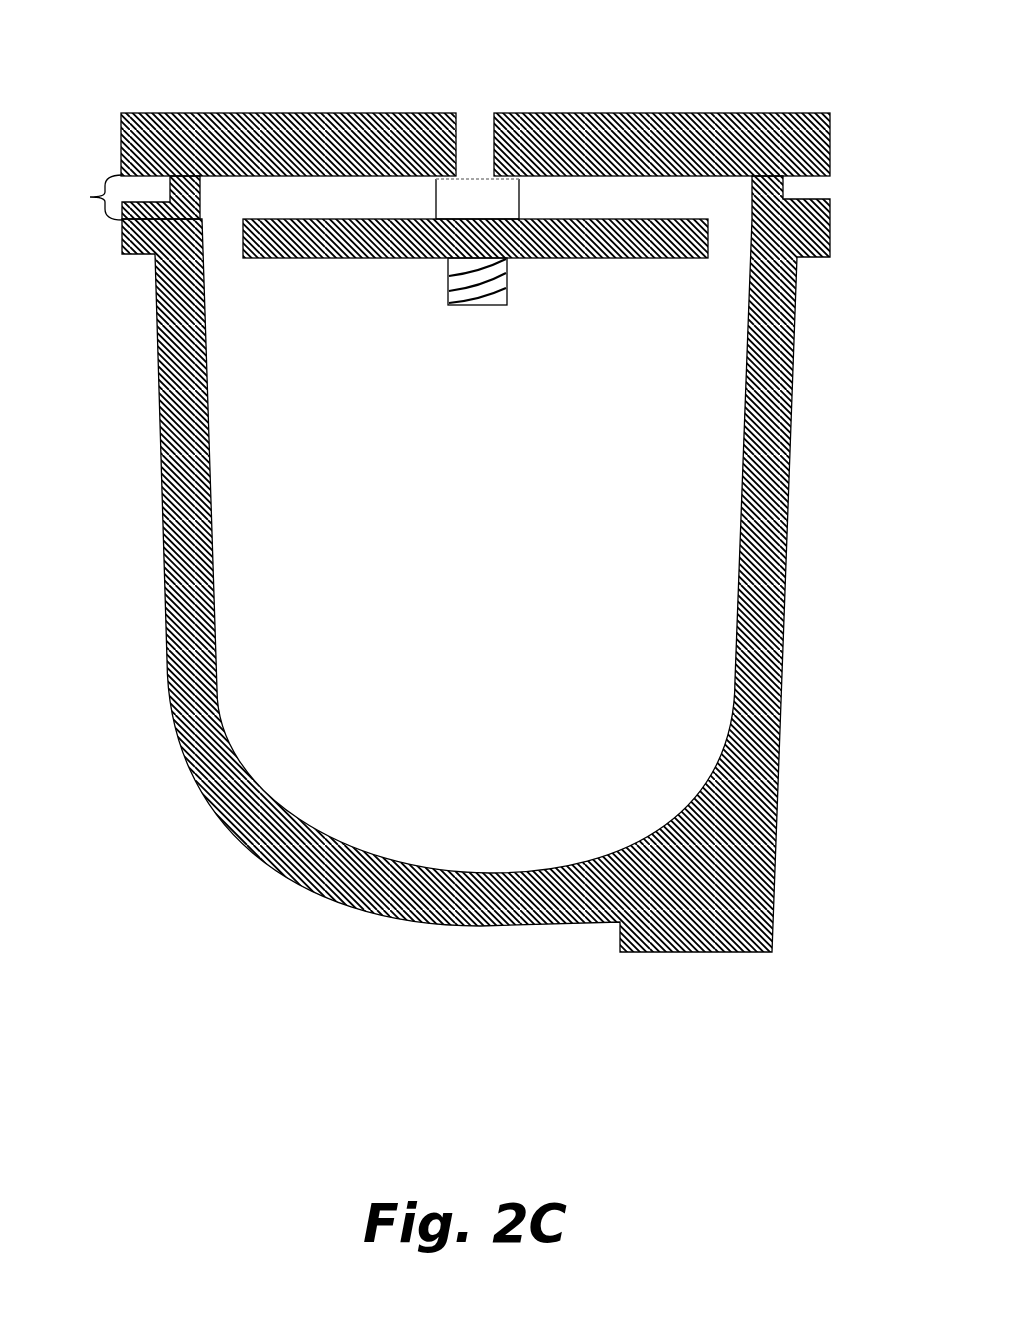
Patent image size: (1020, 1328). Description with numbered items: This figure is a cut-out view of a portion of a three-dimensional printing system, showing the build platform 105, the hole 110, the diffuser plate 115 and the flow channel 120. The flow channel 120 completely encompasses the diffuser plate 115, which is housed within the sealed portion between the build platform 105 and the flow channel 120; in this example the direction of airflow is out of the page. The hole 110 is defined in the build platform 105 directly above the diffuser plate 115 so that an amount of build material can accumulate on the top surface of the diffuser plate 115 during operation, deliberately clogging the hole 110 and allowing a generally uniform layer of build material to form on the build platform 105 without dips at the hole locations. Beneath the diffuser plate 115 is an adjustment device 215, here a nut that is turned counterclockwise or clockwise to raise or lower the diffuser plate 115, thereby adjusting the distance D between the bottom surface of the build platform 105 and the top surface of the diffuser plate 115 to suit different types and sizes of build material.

The build platform 105 is at (270, 127).
The hole 110 is at (478, 126).
The diffuser plate 115 is at (647, 250).
The flow channel 120 is at (315, 502).
The adjustment device 215 is at (483, 306).
The distance D is at (74, 197).